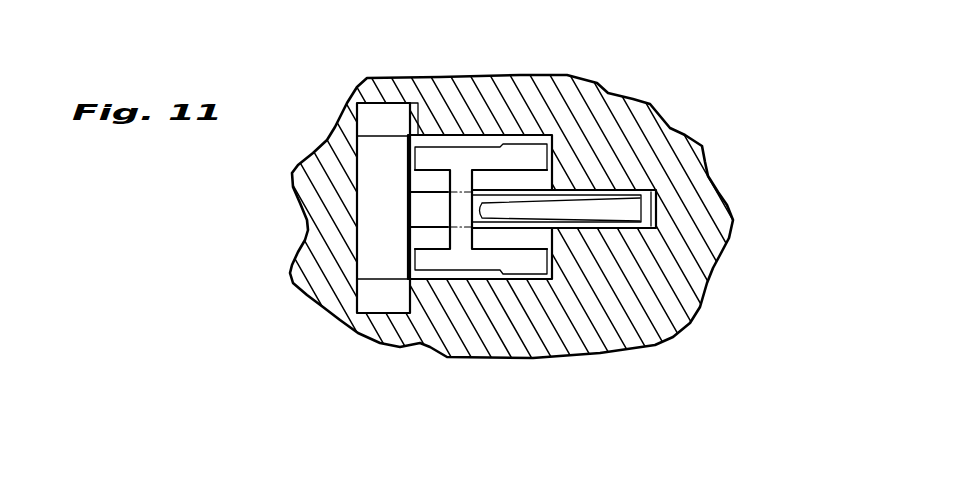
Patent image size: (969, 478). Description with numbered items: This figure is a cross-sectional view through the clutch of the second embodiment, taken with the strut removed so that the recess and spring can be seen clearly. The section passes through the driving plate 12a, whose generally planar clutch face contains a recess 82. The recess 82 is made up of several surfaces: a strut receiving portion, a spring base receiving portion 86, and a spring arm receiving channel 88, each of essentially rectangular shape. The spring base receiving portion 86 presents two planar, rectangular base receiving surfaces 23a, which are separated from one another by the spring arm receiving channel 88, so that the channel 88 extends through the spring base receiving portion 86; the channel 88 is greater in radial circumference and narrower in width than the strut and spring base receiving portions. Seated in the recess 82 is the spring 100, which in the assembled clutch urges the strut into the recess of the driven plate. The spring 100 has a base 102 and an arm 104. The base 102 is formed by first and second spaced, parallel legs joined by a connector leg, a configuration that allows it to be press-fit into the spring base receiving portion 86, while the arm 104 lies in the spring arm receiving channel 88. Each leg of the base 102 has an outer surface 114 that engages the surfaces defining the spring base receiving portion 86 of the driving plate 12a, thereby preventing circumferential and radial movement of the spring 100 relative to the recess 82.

The driving plate 12a is at (709, 284).
The base receiving surfaces 23a is at (457, 280).
The recess 82 is at (535, 283).
The spring base receiving portion 86 is at (409, 103).
The spring arm receiving channel 88 is at (643, 203).
The spring 100 is at (400, 258).
The base 102 is at (530, 153).
The arm 104 is at (627, 207).
The outer surface 114 is at (437, 280).